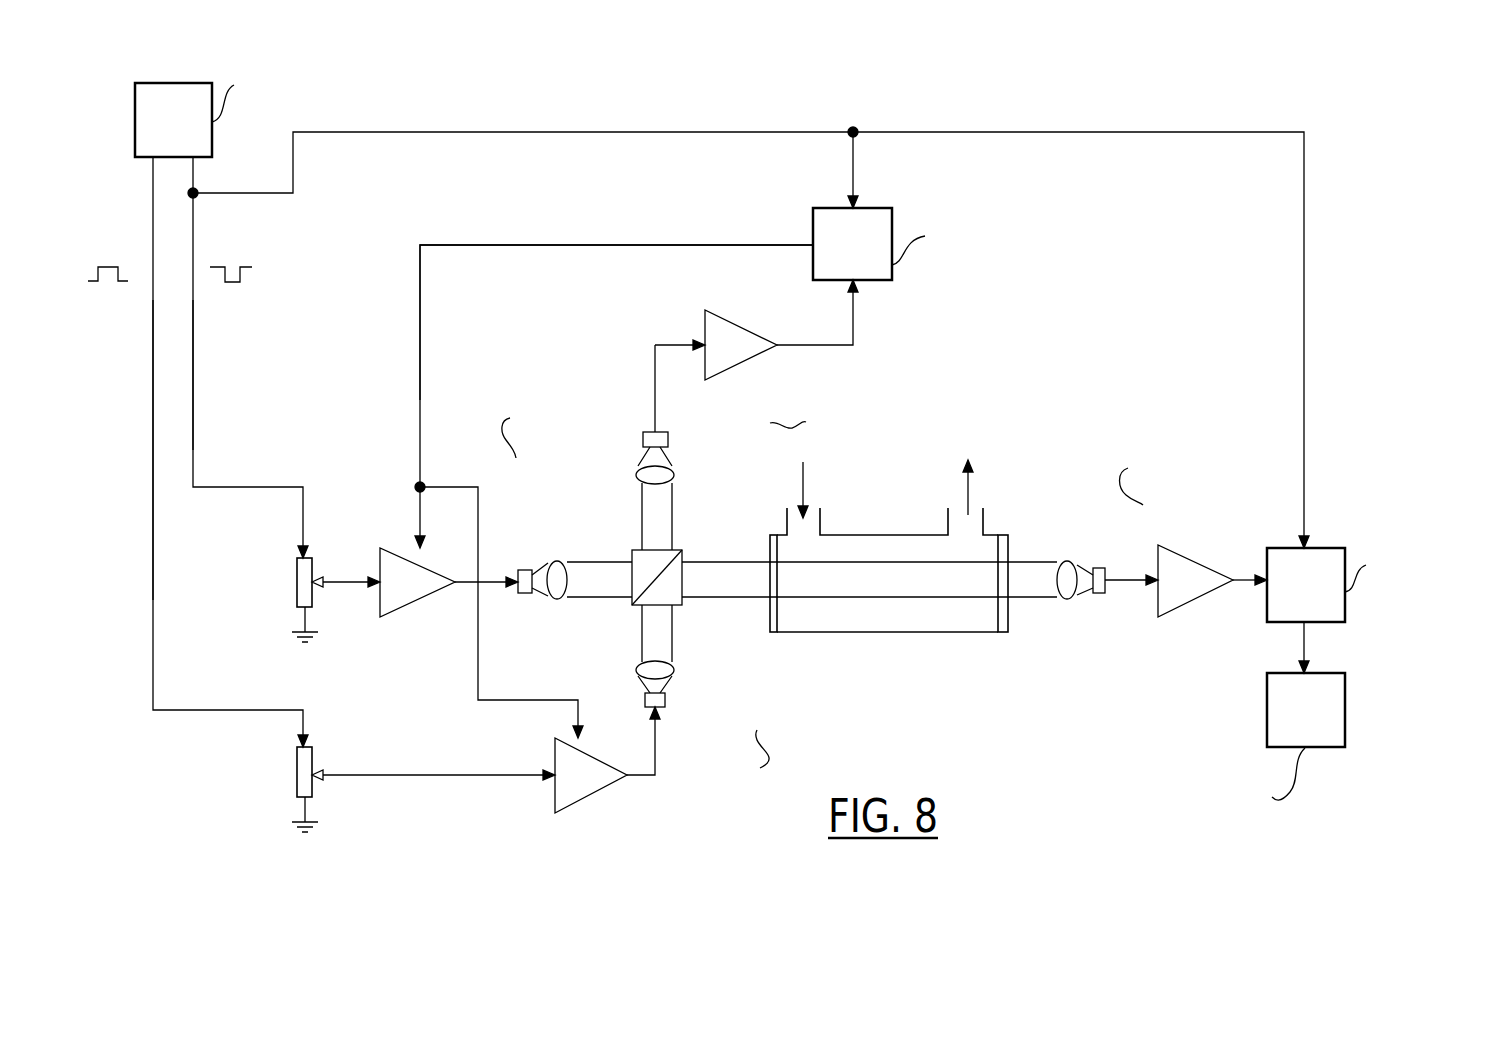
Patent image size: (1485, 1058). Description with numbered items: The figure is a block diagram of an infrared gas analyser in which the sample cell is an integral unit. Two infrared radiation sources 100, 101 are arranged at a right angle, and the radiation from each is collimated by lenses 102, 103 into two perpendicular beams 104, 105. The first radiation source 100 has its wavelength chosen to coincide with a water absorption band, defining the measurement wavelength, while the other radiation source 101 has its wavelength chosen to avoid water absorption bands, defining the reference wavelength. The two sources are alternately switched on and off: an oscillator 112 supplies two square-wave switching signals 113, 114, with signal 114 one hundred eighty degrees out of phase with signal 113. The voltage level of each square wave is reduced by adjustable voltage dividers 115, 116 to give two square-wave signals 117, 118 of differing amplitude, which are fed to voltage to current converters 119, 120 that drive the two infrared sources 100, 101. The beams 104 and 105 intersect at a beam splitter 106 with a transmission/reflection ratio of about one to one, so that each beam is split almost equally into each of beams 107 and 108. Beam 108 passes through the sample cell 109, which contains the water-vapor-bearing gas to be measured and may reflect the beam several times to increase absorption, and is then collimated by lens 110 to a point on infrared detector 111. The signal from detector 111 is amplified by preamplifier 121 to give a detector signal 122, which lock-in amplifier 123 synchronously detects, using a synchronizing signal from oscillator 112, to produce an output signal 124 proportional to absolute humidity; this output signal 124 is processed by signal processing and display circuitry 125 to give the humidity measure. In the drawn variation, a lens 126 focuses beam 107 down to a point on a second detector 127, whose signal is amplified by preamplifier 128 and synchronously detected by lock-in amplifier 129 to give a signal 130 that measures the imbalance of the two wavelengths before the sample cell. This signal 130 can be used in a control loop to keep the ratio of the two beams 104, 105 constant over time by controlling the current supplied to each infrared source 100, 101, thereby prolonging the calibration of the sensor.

The first infrared radiation source 100 is at (518, 584).
The second infrared radiation source 101 is at (667, 701).
The lens 102 is at (551, 565).
The lens 103 is at (675, 672).
The first beam 104 is at (586, 561).
The second beam 105 is at (641, 640).
The beam splitter 106 is at (633, 605).
The beam 107 is at (673, 530).
The beam 108 is at (685, 598).
The sample cell 109 is at (872, 633).
The lens 110 is at (1090, 522).
The infrared detector 111 is at (1156, 522).
The oscillator 112 is at (250, 115).
The switching signal 113 is at (200, 362).
The switching signal 114 is at (151, 292).
The adjustable voltage divider 115 is at (297, 590).
The adjustable voltage divider 116 is at (297, 776).
The square wave signal 117 is at (350, 580).
The square wave signal 118 is at (398, 777).
The voltage to current converter 119 is at (400, 612).
The voltage to current converter 120 is at (582, 800).
The preamplifier 121 is at (1246, 522).
The detector signal 122 is at (1252, 582).
The lock-in amplifier 123 is at (1363, 585).
The output signal 124 is at (1306, 645).
The signal processing and display circuitry 125 is at (1315, 762).
The lens 126 is at (675, 476).
The second detector 127 is at (668, 441).
The preamplifier 128 is at (740, 366).
The lock-in amplifier 129 is at (945, 244).
The balance signal 130 is at (476, 244).